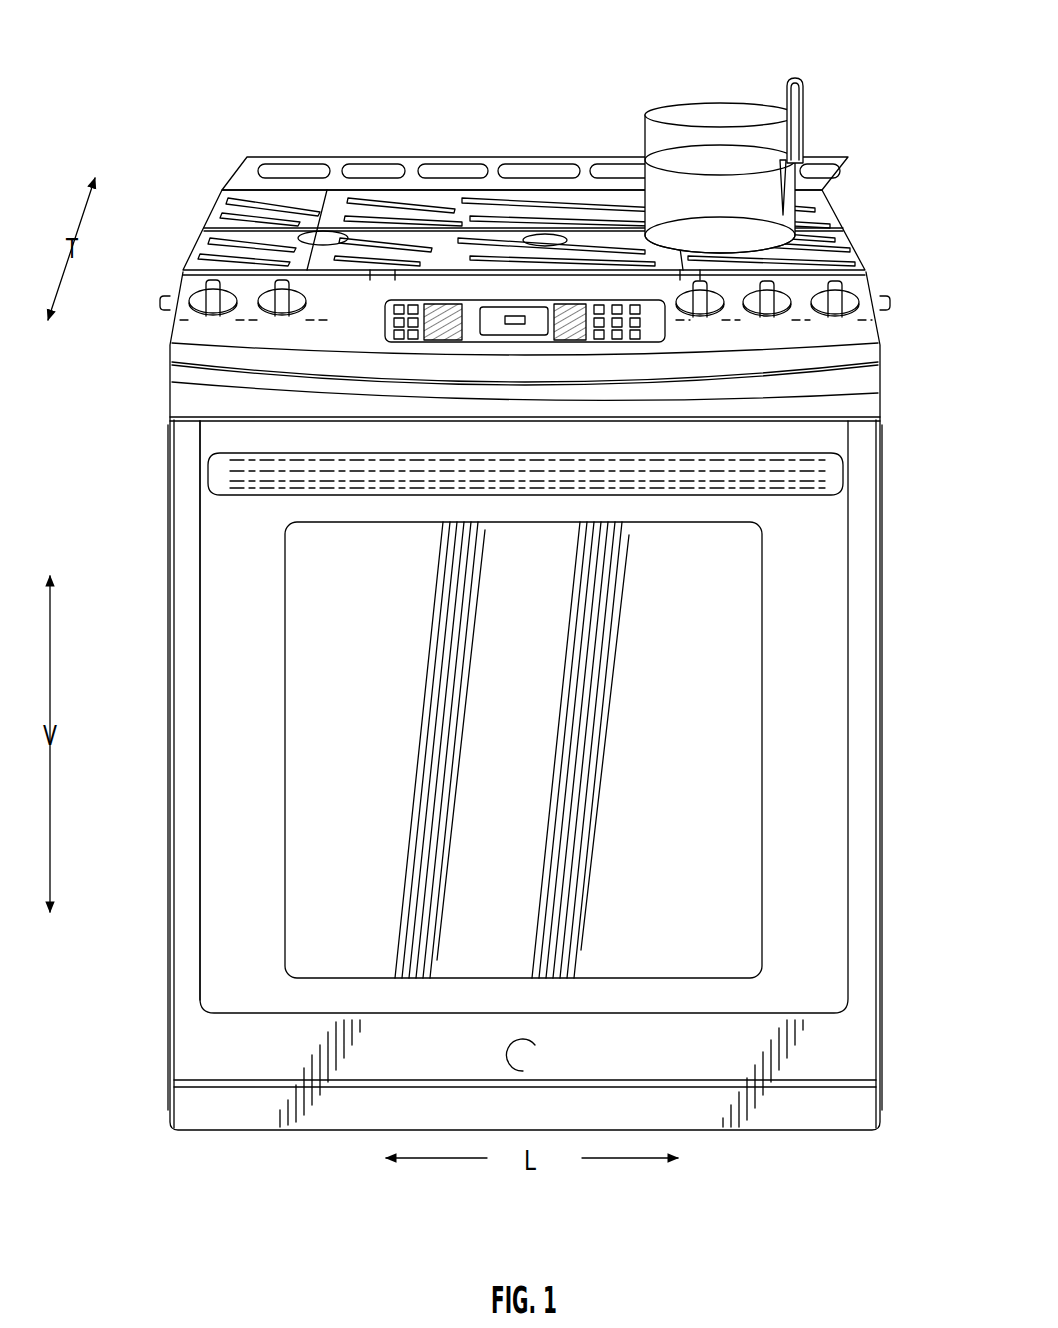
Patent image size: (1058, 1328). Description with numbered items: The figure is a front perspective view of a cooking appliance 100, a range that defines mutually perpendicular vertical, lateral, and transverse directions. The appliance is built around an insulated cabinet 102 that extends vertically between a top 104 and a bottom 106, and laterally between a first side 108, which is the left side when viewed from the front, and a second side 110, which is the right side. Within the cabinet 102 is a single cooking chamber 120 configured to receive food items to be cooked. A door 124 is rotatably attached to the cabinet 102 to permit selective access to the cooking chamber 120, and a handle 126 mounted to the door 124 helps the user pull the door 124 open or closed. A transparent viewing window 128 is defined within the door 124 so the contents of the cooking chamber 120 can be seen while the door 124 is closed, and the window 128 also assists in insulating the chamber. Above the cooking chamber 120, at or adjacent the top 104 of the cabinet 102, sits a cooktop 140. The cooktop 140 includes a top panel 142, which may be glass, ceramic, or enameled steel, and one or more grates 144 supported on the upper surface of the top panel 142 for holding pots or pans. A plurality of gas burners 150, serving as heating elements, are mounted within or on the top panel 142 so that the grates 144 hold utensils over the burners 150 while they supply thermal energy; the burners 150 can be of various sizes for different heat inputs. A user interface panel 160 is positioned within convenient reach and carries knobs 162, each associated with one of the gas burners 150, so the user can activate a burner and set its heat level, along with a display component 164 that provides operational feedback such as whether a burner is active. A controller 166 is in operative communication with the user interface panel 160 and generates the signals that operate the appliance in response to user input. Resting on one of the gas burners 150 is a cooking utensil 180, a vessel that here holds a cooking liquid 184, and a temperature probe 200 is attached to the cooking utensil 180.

The cooking appliance 100 is at (511, 565).
The insulated cabinet 102 is at (860, 398).
The top 104 is at (515, 222).
The bottom 106 is at (166, 1128).
The first side 108 is at (166, 782).
The second side 110 is at (884, 826).
The cooking chamber 120 is at (570, 744).
The door 124 is at (166, 617).
The handle 126 is at (828, 466).
The transparent viewing window 128 is at (666, 955).
The cooktop 140 is at (528, 148).
The top panel 142 is at (833, 242).
The grate 144 is at (208, 228).
The gas burner 150 is at (325, 236).
The user interface panel 160 is at (374, 265).
The knob 162 is at (283, 302).
The display component 164 is at (510, 308).
The controller 166 is at (582, 306).
The cooking utensil 180 is at (698, 148).
The cooking liquid 184 is at (706, 215).
The temperature probe 200 is at (802, 90).